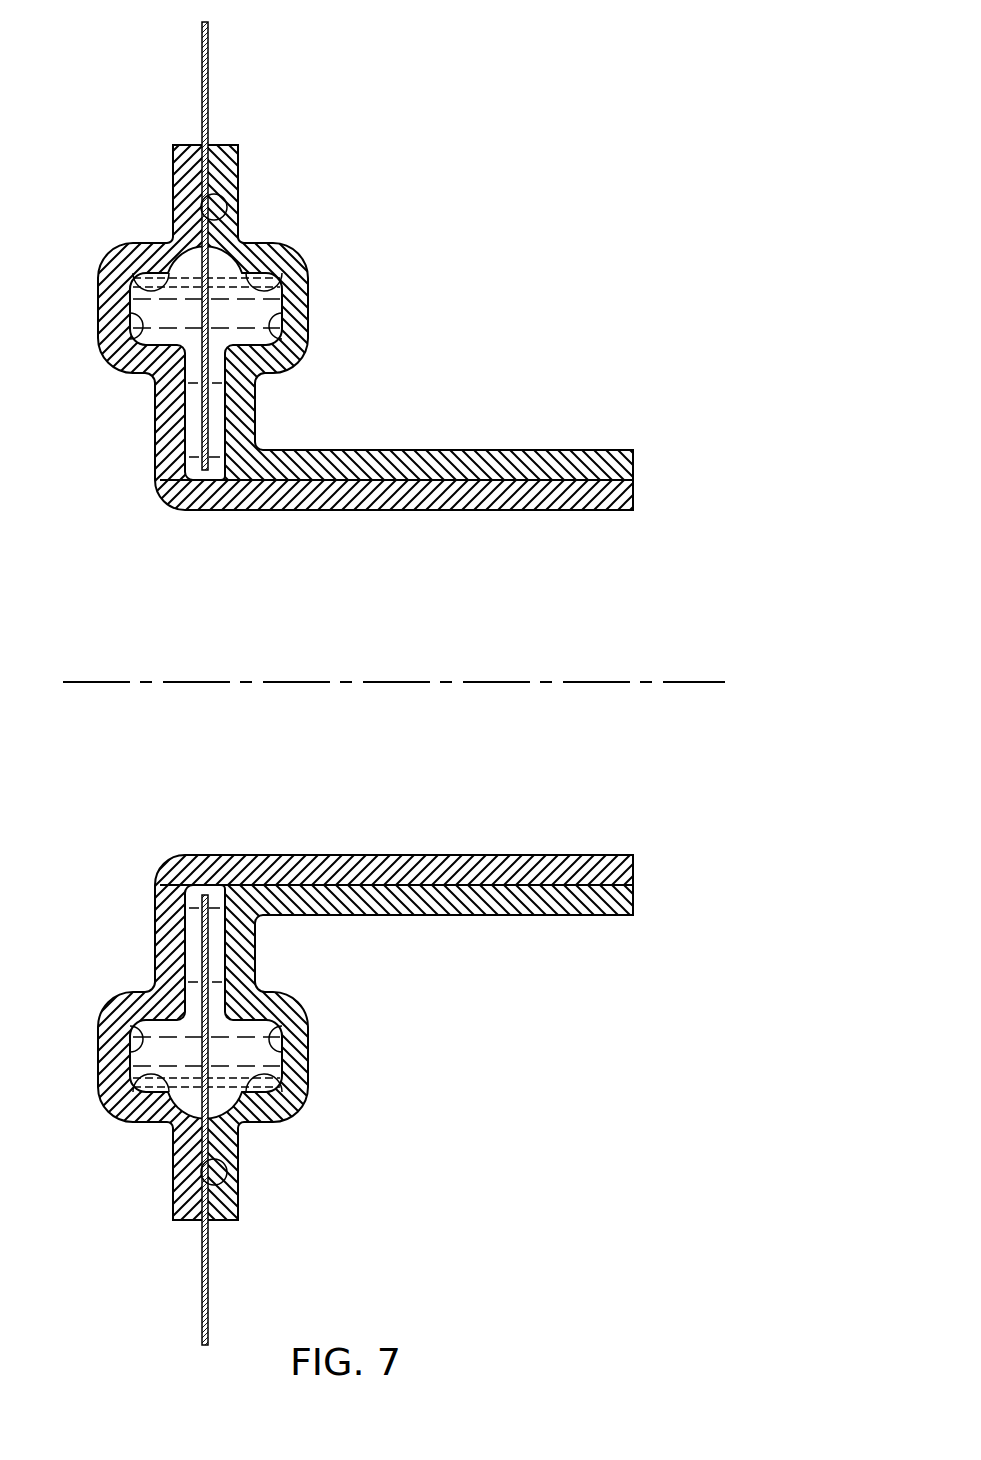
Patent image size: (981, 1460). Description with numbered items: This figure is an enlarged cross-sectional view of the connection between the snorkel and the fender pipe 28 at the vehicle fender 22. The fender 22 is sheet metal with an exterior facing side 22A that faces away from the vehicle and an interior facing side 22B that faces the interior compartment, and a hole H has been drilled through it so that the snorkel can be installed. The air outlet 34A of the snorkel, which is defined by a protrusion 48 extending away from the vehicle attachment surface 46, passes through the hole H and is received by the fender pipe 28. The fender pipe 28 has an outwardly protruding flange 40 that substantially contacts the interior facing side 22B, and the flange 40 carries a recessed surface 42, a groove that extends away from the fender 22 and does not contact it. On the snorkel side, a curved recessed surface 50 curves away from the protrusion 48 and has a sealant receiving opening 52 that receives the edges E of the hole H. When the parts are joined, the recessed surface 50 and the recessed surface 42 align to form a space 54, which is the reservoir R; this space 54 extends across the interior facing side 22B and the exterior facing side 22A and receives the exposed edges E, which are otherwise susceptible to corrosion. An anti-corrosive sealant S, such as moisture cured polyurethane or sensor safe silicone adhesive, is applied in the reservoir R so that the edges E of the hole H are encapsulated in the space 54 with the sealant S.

The vehicle fender 22 is at (205, 22).
The exterior facing side 22A is at (202, 70).
The interior facing side 22B is at (208, 92).
The fender pipe 28 is at (479, 450).
The air outlet 34A is at (538, 511).
The flange 40 is at (173, 165).
The recessed surface 42 is at (291, 357).
The vehicle attachment surface 46 is at (212, 217).
The protrusion 48 is at (238, 182).
The recessed surface 50 is at (130, 357).
The sealant receiving opening 52 is at (130, 285).
The space 54 is at (253, 298).
The reservoir R is at (190, 350).
The sealant S is at (250, 298).
The edges E is at (205, 472).
The hole H is at (108, 642).